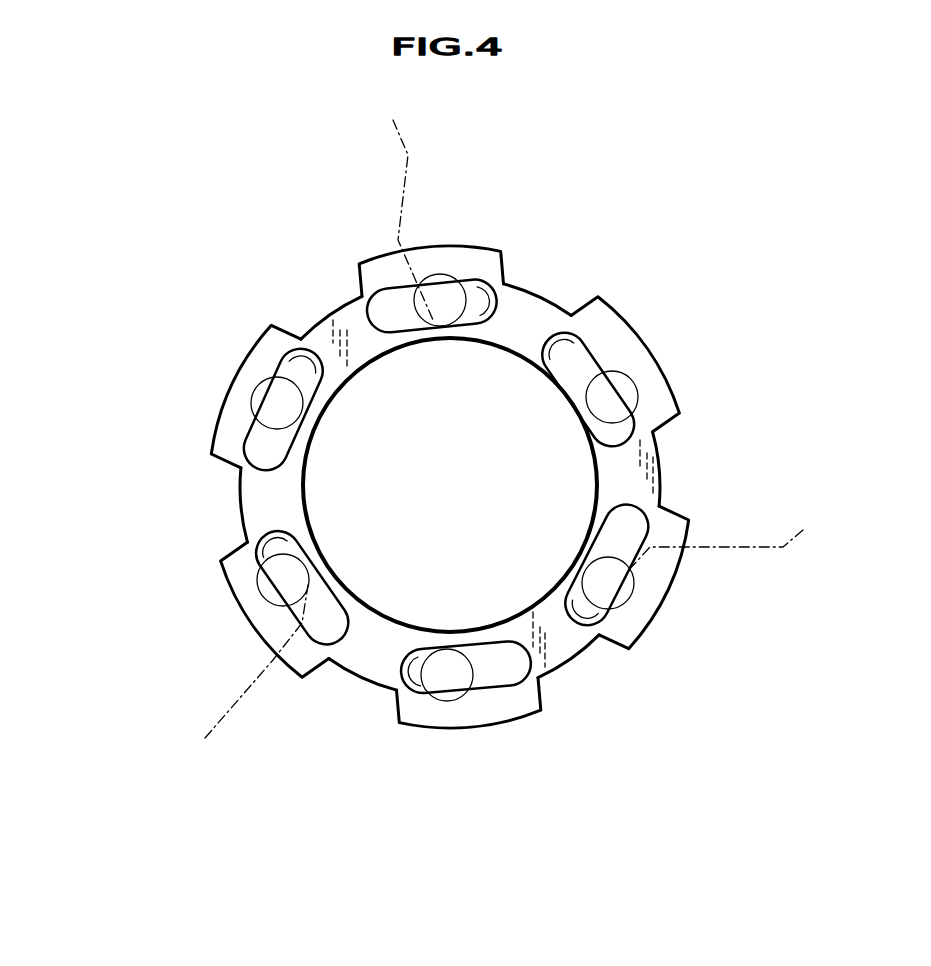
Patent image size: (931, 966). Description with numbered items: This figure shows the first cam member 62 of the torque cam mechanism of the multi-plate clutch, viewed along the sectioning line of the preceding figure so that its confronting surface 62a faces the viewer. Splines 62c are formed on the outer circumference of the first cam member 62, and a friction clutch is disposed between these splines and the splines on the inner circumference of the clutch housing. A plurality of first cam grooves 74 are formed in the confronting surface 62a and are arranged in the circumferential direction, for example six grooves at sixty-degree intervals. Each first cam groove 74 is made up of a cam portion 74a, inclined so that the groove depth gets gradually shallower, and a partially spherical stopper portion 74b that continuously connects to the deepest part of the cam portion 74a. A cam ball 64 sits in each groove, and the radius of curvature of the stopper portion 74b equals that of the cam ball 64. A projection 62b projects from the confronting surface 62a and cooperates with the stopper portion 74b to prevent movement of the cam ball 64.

The first cam member 62 is at (518, 270).
The confronting surface 62a is at (250, 513).
The projection 62b is at (310, 356).
The splines 62c is at (358, 283).
The cam ball 64 is at (508, 431).
The first cam groove 74 is at (441, 565).
The cam portion 74a is at (262, 380).
The stopper portion 74b is at (262, 385).